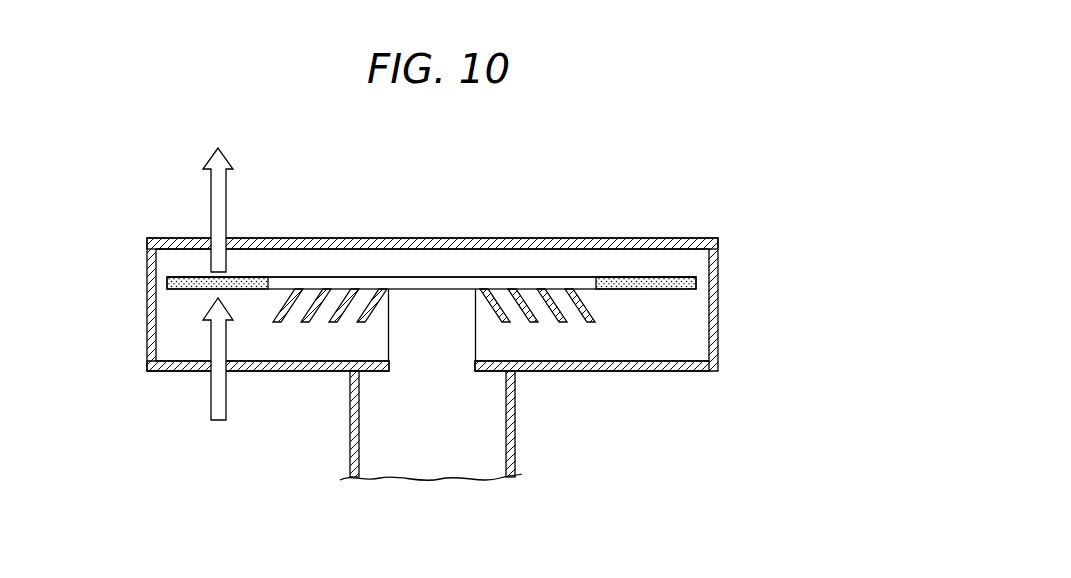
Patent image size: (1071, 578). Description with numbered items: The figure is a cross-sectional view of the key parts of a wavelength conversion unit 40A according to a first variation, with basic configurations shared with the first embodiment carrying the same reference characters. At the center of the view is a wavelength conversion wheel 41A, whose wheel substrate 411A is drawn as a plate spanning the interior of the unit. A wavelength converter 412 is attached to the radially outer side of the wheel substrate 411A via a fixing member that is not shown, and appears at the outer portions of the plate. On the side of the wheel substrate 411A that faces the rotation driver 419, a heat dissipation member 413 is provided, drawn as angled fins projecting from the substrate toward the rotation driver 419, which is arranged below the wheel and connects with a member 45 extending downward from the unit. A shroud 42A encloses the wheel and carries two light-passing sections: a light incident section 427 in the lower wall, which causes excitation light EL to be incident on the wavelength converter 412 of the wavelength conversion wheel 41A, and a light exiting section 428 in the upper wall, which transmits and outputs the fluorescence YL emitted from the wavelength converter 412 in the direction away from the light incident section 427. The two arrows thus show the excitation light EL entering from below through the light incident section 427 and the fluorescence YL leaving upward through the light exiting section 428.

The wavelength conversion unit 40A is at (702, 213).
The wavelength conversion wheel 41A is at (411, 270).
The wheel substrate 411A is at (501, 283).
The wavelength converter 412 is at (167, 283).
The heat dissipation member 413 is at (587, 322).
The rotation driver 419 is at (426, 345).
The light incident section 427 is at (253, 366).
The light exiting section 428 is at (254, 238).
The shroud 42A is at (693, 239).
The pipe 45 is at (516, 450).
The fluorescence YL is at (216, 198).
The excitation light EL is at (212, 405).